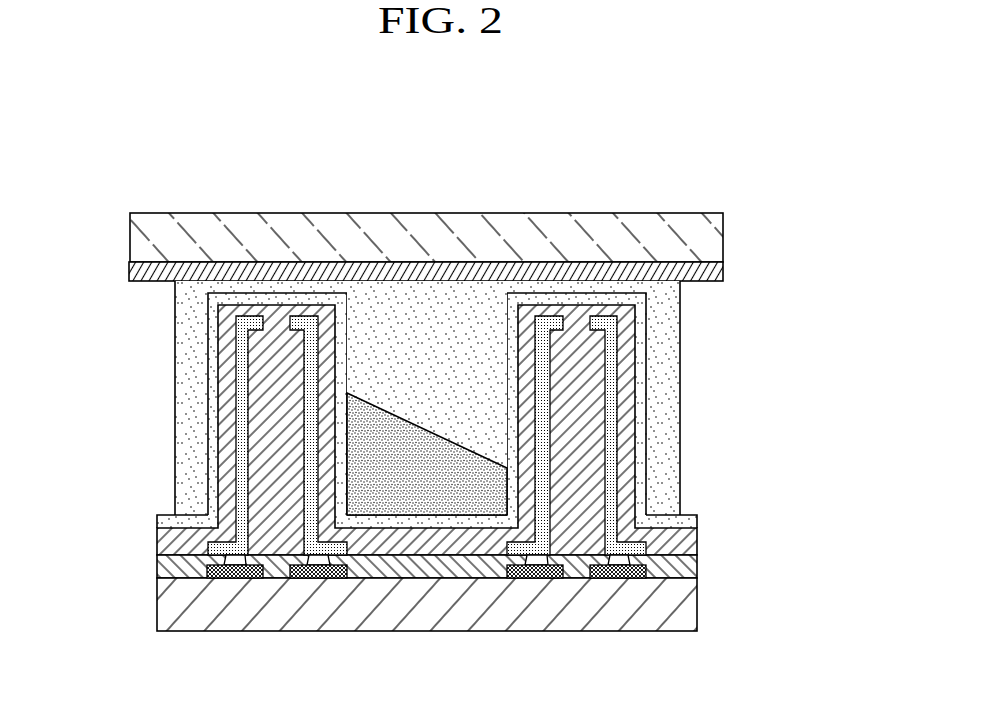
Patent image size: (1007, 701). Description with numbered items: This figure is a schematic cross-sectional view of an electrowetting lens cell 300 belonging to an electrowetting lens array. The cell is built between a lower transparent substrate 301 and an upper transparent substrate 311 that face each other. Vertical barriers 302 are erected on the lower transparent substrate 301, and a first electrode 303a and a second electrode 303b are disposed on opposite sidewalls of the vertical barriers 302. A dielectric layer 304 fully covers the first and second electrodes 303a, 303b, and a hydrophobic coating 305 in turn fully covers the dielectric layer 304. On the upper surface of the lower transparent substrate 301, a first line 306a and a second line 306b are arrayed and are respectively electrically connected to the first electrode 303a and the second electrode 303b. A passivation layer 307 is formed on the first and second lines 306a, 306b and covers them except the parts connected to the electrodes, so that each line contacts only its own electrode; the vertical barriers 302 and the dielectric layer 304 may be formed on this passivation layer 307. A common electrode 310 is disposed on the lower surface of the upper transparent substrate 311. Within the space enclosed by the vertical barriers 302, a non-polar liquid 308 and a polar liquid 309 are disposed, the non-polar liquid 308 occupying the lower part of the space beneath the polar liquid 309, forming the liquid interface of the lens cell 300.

The electrowetting lens cell 300 is at (150, 178).
The lower transparent substrate 301 is at (690, 605).
The vertical barriers 302 is at (248, 463).
The first electrode 303a is at (308, 322).
The second electrode 303b is at (248, 322).
The dielectric layer 304 is at (230, 332).
The hydrophobic coating 305 is at (213, 358).
The first line 306a is at (315, 579).
The second line 306b is at (535, 579).
The passivation layer 307 is at (685, 567).
The non-polar liquid 308 is at (427, 500).
The polar liquid 309 is at (429, 307).
The common electrode 310 is at (713, 275).
The upper transparent substrate 311 is at (713, 243).